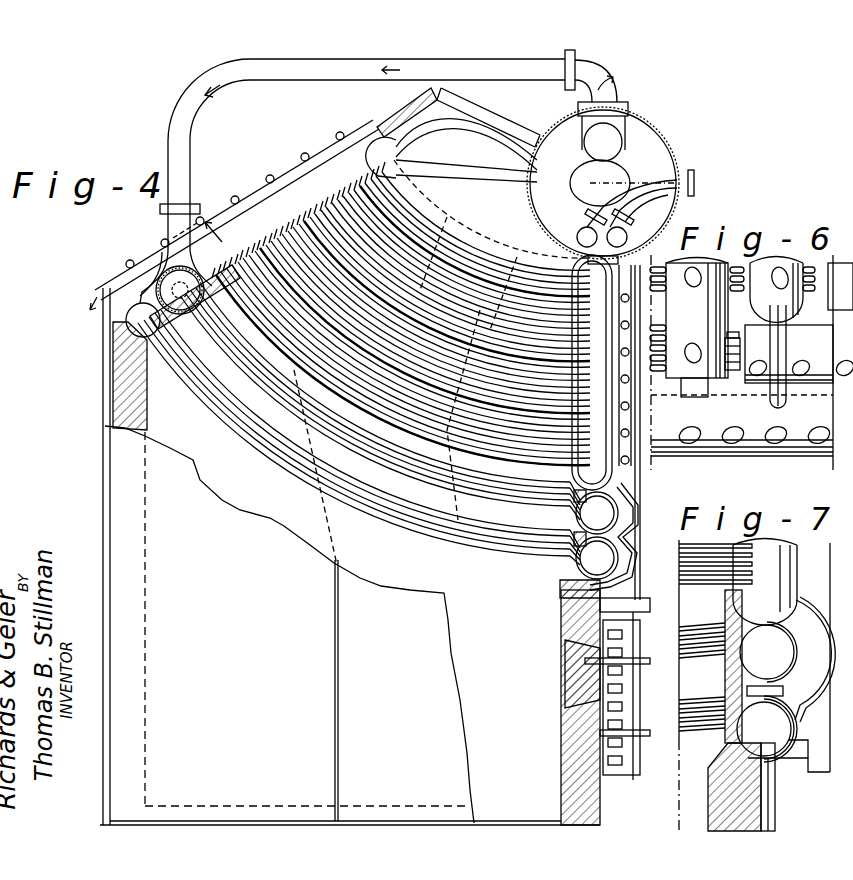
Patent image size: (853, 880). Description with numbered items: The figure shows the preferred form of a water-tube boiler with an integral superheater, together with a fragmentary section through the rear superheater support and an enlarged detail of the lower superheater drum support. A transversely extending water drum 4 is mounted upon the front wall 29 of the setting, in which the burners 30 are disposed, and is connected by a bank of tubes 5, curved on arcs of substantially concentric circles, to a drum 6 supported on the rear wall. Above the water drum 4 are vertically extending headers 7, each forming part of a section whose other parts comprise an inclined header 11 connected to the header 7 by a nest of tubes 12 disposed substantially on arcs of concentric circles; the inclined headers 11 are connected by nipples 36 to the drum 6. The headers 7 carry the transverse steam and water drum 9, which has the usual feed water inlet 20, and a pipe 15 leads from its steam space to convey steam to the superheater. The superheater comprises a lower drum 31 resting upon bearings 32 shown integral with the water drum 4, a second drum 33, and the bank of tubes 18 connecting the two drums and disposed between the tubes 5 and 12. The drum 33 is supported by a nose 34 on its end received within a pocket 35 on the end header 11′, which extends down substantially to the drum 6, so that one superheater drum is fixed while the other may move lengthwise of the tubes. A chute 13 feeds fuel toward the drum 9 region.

In FIG. 4, the water drum 4 is at (612, 560).
In FIG. 7, the water drum 4 is at (776, 731).
In FIG. 4, the tubes 5 is at (280, 468).
In FIG. 7, the tubes 5 is at (697, 714).
In FIG. 4, the drum 6 is at (85, 355).
In FIG. 6, the drum 6 is at (760, 443).
In FIG. 4, the vertical headers 7 is at (612, 468).
In FIG. 7, the vertical headers 7 is at (786, 585).
In FIG. 4, the steam and water drum 9 is at (650, 147).
In FIG. 4, the inclined header 11 is at (280, 213).
In FIG. 6, the inclined header 11 is at (792, 277).
In FIG. 6, the end headers 11′ is at (680, 272).
In FIG. 4, the tubes 12 is at (466, 257).
In FIG. 6, the tubes 12 is at (724, 275).
In FIG. 7, the tubes 12 is at (715, 559).
In FIG. 4, the chute 13 is at (478, 165).
In FIG. 4, the pipe 15 is at (262, 68).
In FIG. 4, the tubes 18 is at (423, 487).
In FIG. 7, the tubes 18 is at (695, 642).
In FIG. 4, the feed water inlet 20 is at (692, 183).
In FIG. 4, the front wall 29 is at (592, 613).
In FIG. 7, the front wall 29 is at (725, 798).
In FIG. 4, the burners 30 is at (628, 655).
In FIG. 4, the lower superheater drum 31 is at (612, 512).
In FIG. 7, the lower superheater drum 31 is at (780, 640).
In FIG. 7, the bearings 32 is at (764, 688).
In FIG. 4, the superheater drum 33 is at (170, 287).
In FIG. 6, the superheater drum 33 is at (802, 332).
In FIG. 6, the nose 34 is at (742, 349).
In FIG. 6, the pocket 35 is at (733, 336).
In FIG. 4, the nipples 36 is at (172, 262).
In FIG. 6, the nipples 36 is at (776, 372).